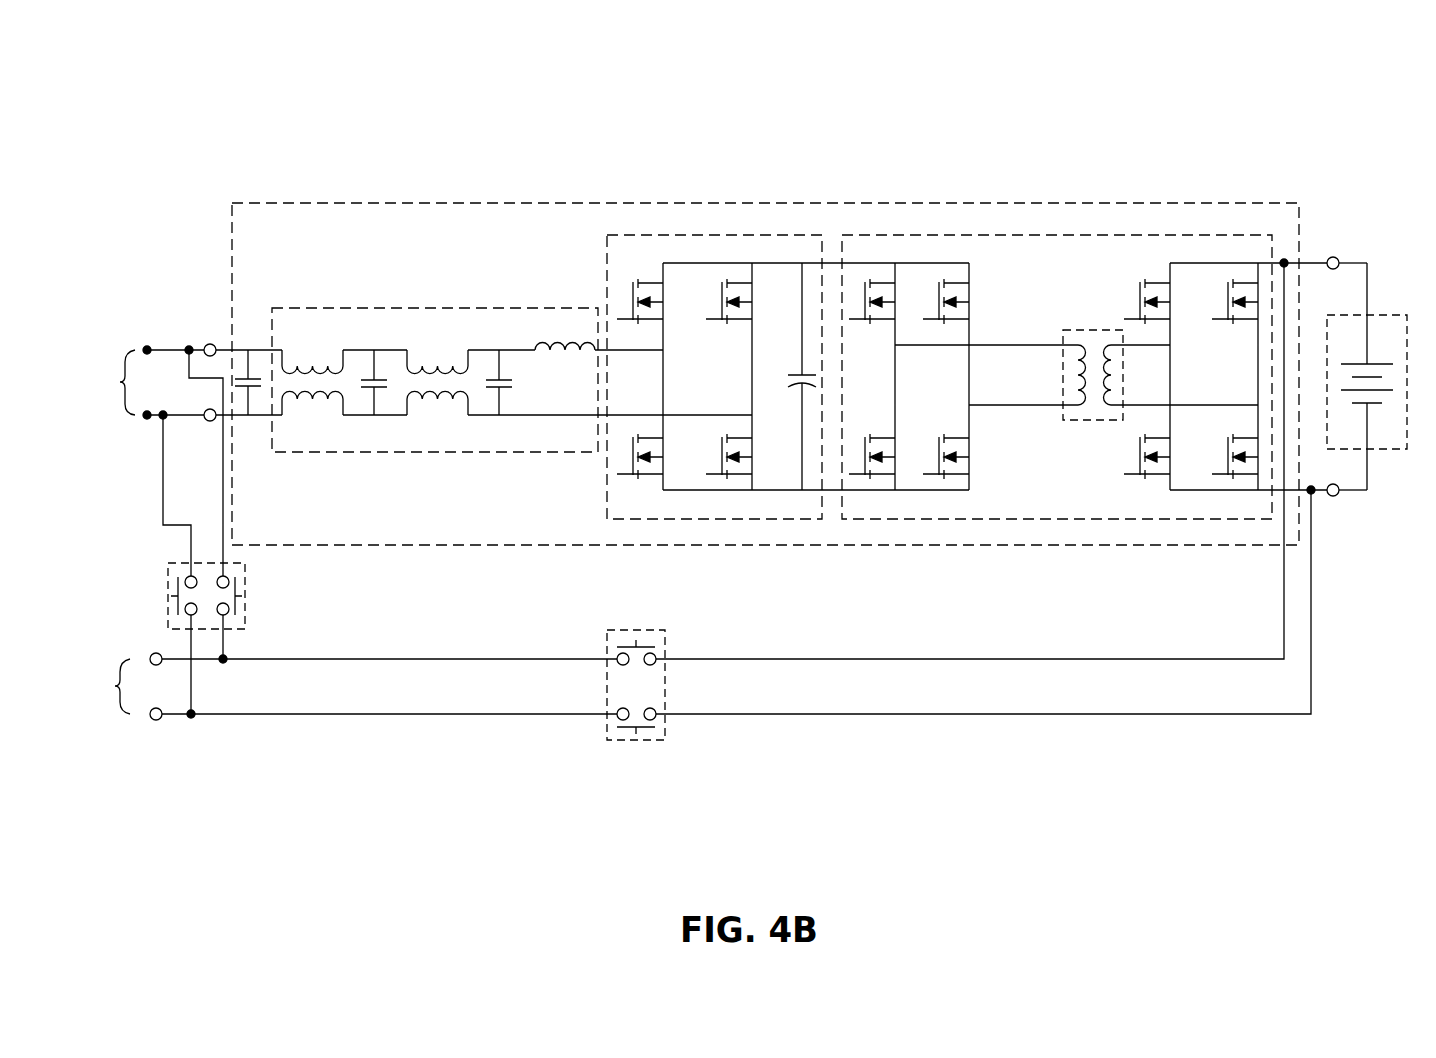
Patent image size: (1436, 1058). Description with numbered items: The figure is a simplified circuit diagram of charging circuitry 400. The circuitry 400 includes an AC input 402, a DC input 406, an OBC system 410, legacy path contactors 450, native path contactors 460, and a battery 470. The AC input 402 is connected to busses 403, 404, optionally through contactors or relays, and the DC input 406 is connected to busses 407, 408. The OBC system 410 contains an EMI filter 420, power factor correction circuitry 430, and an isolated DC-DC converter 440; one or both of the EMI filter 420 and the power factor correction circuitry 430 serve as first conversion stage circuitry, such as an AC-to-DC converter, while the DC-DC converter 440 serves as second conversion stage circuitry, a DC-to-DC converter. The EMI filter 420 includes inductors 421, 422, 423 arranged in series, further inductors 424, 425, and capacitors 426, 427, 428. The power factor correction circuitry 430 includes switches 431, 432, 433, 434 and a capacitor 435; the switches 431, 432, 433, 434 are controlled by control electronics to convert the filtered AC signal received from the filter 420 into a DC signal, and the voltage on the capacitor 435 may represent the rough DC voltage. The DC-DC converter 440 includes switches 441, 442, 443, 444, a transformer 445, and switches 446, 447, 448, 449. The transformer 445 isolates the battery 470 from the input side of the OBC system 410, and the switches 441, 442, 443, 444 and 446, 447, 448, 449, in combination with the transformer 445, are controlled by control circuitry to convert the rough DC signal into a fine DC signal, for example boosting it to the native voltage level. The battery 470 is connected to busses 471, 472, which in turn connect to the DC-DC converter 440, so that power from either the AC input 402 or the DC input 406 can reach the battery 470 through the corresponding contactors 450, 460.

The circuitry 400 is at (152, 88).
The AC input 402 is at (122, 382).
The bus 403 is at (177, 348).
The bus 404 is at (180, 420).
The DC input 406 is at (121, 686).
The bus 407 is at (448, 657).
The bus 408 is at (378, 716).
The OBC system 410 is at (775, 203).
The EMI filter 420 is at (435, 308).
The inductor 421 is at (305, 370).
The inductor 422 is at (428, 372).
The inductor 423 is at (553, 351).
The inductor 424 is at (303, 398).
The inductor 425 is at (427, 398).
The capacitor 426 is at (257, 378).
The capacitor 427 is at (365, 378).
The capacitor 428 is at (488, 378).
The power factor correction circuitry 430 is at (660, 235).
The switch 431 is at (632, 292).
The switch 432 is at (715, 322).
The switch 433 is at (648, 476).
The switch 434 is at (738, 476).
The capacitor 435 is at (792, 373).
The isolated DC-DC converter 440 is at (1055, 235).
The switch 441 is at (883, 282).
The switch 442 is at (948, 300).
The switch 443 is at (868, 455).
The switch 444 is at (948, 458).
The transformer 445 is at (1063, 365).
The switch 446 is at (1140, 290).
The switch 447 is at (1228, 303).
The switch 448 is at (1140, 456).
The switch 449 is at (1228, 460).
The legacy path contactors 450 is at (245, 597).
The native path contactors 460 is at (640, 740).
The battery 470 is at (1400, 315).
The bus 471 is at (1352, 262).
The bus 472 is at (1350, 497).